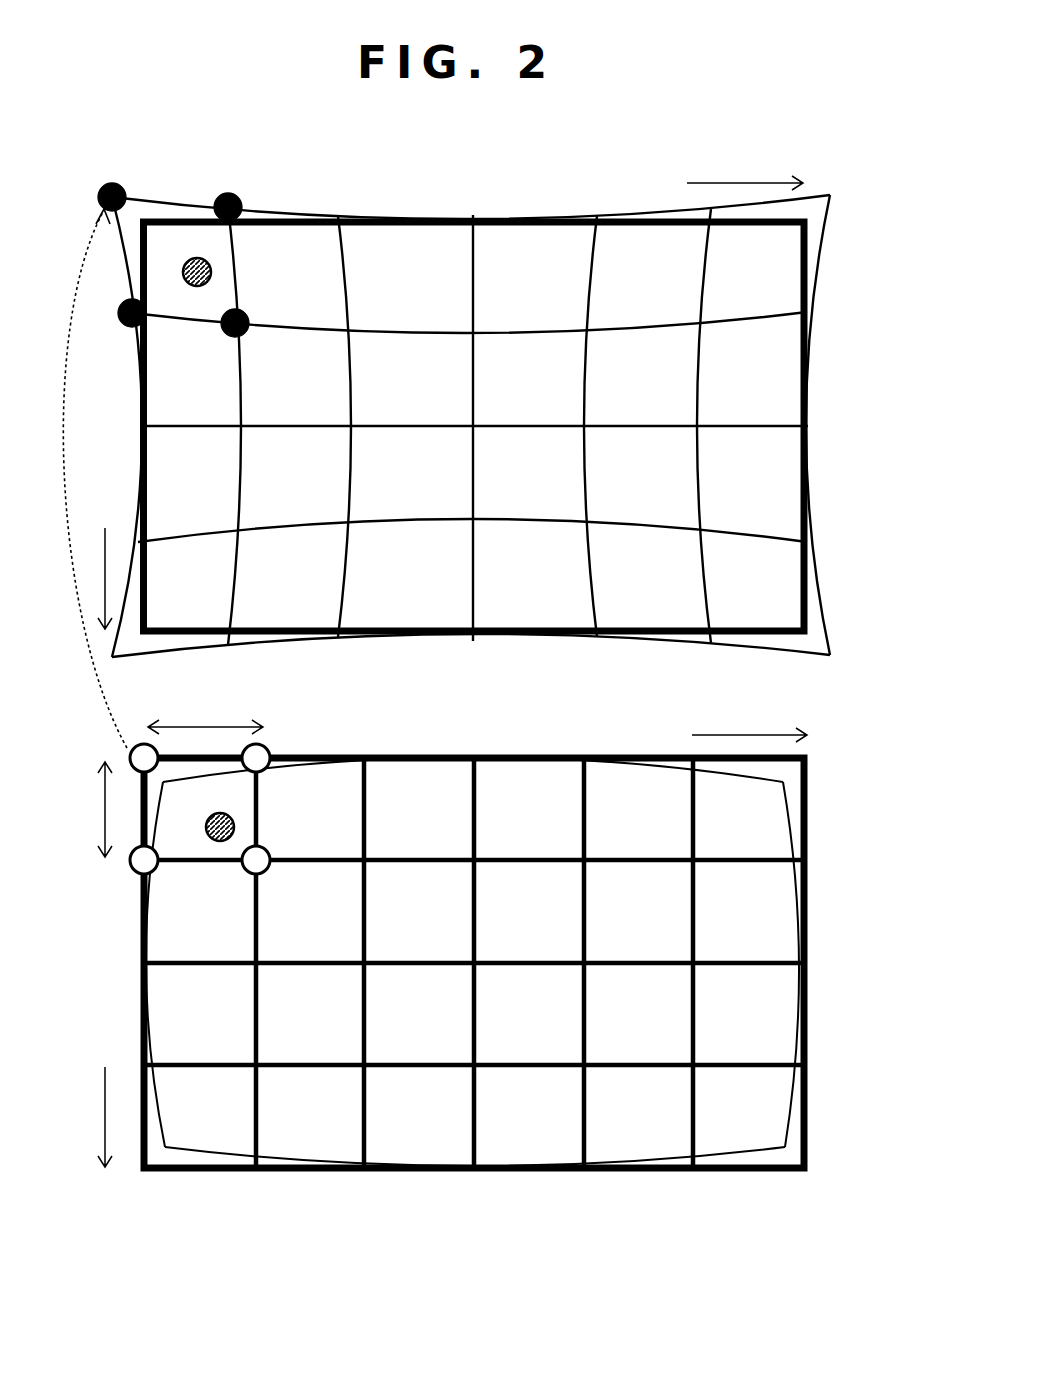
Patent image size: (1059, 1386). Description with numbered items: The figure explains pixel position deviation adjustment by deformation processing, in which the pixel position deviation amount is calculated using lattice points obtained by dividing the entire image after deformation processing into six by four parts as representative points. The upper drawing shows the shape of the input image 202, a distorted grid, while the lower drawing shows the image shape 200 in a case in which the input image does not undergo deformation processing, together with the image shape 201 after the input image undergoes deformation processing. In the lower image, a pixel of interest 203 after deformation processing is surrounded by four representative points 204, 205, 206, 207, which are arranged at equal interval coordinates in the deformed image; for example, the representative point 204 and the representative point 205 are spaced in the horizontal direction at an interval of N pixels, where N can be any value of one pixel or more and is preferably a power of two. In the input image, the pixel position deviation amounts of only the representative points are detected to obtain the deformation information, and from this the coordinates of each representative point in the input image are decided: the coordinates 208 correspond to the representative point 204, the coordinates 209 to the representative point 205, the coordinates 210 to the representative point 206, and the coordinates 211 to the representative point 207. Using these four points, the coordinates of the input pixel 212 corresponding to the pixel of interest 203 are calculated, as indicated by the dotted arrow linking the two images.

The image shape without deformation processing 200 is at (808, 808).
The image shape after deformation processing 201 is at (799, 1120).
The shape of input image 202 is at (810, 578).
The pixel of interest 203 is at (212, 840).
The representative point 204 is at (128, 755).
The representative point 205 is at (268, 752).
The representative point 206 is at (131, 872).
The representative point 207 is at (267, 847).
The coordinates in input image corresponding to representative point 204 208 is at (105, 183).
The coordinates in input image corresponding to representative point 205 209 is at (240, 200).
The coordinates in input image corresponding to representative point 206 210 is at (122, 326).
The coordinates in input image corresponding to representative point 207 211 is at (247, 311).
The input pixel 212 is at (191, 258).